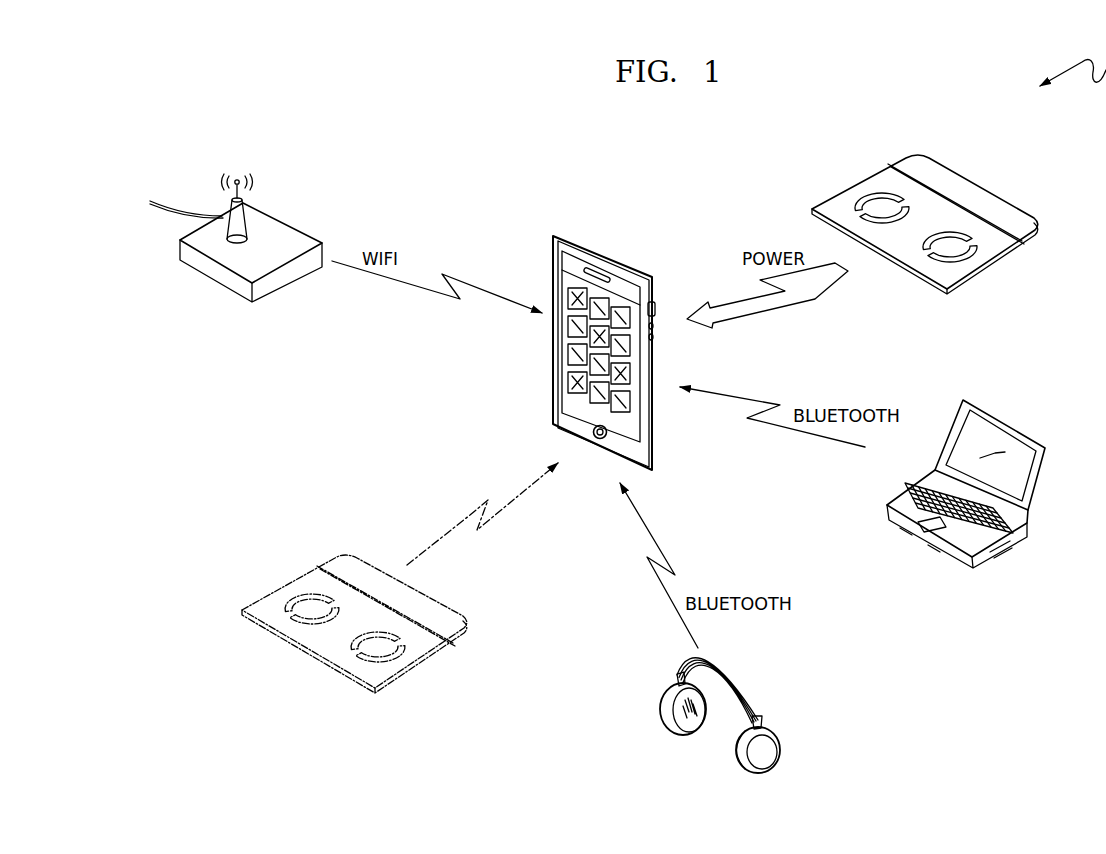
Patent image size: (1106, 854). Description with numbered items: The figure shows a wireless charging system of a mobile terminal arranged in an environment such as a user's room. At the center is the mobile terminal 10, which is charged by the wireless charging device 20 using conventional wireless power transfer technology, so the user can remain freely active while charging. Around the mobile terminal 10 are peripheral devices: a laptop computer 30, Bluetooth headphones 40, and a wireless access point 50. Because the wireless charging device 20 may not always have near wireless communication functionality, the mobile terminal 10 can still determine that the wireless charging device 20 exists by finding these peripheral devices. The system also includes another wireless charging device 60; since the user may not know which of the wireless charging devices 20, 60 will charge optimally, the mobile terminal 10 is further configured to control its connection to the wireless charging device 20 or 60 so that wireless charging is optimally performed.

The mobile terminal 10 is at (612, 261).
The wireless charging device 20 is at (987, 263).
The laptop computer 30 is at (1013, 423).
The headphones 40 is at (747, 681).
The wireless access point 50 is at (277, 290).
The another wireless charging device 60 is at (400, 677).